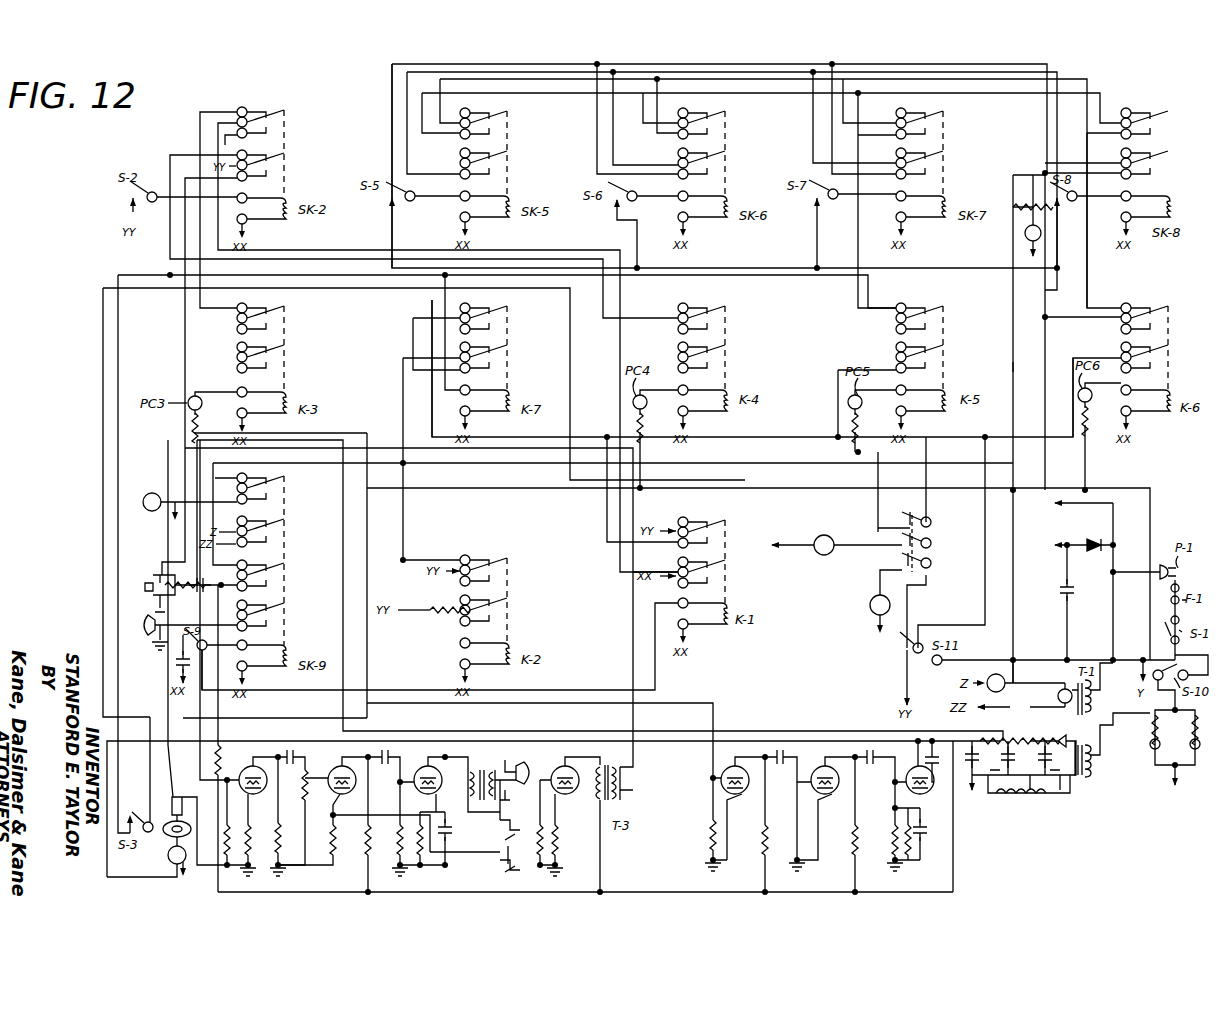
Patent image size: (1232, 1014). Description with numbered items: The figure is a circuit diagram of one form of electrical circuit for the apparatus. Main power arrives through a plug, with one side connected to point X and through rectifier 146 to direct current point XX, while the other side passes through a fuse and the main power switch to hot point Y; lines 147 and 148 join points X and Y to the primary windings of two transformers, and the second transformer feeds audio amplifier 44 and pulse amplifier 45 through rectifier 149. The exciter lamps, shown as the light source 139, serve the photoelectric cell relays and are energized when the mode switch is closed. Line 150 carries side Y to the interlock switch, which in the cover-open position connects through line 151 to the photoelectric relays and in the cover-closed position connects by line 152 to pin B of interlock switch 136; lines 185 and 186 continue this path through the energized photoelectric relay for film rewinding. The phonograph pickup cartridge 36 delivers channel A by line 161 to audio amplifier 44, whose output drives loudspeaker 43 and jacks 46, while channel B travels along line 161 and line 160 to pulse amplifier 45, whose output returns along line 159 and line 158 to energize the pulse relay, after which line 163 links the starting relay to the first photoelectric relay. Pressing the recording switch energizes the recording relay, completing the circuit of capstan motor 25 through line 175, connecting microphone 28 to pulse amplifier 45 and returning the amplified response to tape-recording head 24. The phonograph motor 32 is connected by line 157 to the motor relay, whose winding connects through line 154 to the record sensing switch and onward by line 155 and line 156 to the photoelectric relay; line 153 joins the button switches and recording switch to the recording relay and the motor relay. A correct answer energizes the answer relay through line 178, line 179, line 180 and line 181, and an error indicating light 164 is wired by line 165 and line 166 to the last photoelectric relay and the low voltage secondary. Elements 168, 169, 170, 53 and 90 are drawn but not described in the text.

The line 180 is at (788, 90).
The line 165 is at (1013, 176).
The error indicating light 164 is at (1026, 235).
The line 179 is at (1090, 283).
The line 170 is at (168, 250).
The line 156 is at (180, 264).
The line 155 is at (342, 275).
The line 163 is at (200, 318).
The line 181 is at (798, 280).
The line 152 is at (775, 265).
The line 154 is at (410, 396).
The line 175 is at (388, 452).
The line 169 is at (531, 436).
The line 178 is at (766, 468).
The line 168 is at (811, 488).
The line 159 is at (342, 535).
The line 157 is at (366, 666).
The line 158 is at (579, 690).
The line 160 is at (704, 704).
The line 153 is at (315, 718).
The capstan motor 25 is at (150, 496).
The tape-recording head 24 is at (150, 591).
The microphone 28 is at (146, 636).
The line 161 is at (170, 671).
The phonograph pickup cartridge 36 is at (182, 784).
The phonograph motor 32 is at (166, 863).
The line 186 is at (839, 370).
The line 185 is at (984, 438).
The line 166 is at (1013, 362).
The lamp 90 is at (822, 556).
The interlock switch 136 is at (947, 526).
The lamp 53 is at (872, 608).
The line 151 is at (985, 572).
The rectifier 149 is at (1058, 745).
The line 148 is at (1120, 768).
The rectifier 146 is at (1105, 528).
The line 147 is at (1112, 594).
The line 150 is at (1079, 658).
The light source 139 is at (1170, 720).
The audio amplifier 44 is at (411, 786).
The loudspeaker 43 is at (520, 774).
The jacks 46 is at (502, 874).
The pulse amplifier 45 is at (807, 754).